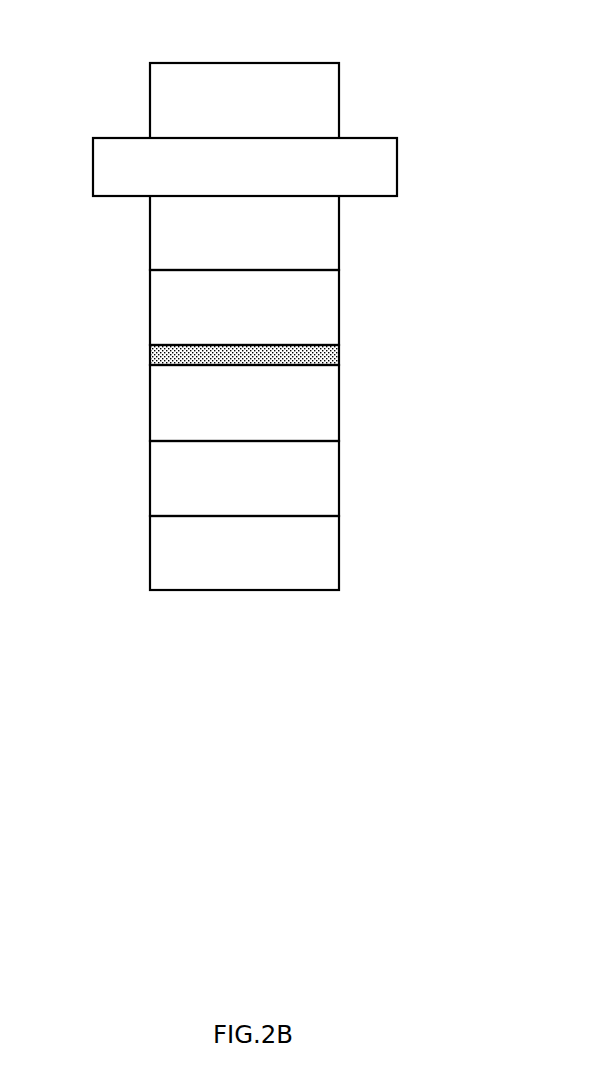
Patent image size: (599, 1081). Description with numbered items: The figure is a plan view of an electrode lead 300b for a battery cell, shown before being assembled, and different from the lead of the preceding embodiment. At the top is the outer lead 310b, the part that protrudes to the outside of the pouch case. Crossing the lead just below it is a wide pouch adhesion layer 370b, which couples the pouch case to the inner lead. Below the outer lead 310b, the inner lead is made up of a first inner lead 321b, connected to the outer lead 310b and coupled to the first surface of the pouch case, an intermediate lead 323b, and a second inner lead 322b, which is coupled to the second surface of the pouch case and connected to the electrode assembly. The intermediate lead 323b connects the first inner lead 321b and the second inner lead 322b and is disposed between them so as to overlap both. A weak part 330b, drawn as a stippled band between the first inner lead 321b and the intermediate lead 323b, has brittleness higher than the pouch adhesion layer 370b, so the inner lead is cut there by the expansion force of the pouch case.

The electrode lead 300b is at (99, 32).
The outer lead 310b is at (332, 100).
The pouch adhesion layer 370b is at (390, 167).
The first inner lead 321b is at (332, 310).
The weak part 330b is at (338, 357).
The intermediate lead 323b is at (332, 403).
The second inner lead 322b is at (332, 478).